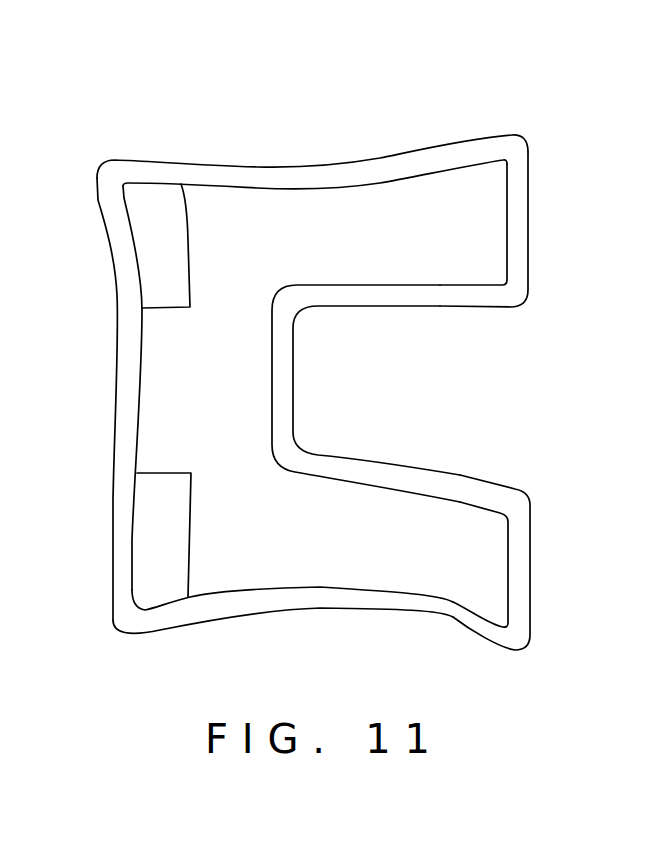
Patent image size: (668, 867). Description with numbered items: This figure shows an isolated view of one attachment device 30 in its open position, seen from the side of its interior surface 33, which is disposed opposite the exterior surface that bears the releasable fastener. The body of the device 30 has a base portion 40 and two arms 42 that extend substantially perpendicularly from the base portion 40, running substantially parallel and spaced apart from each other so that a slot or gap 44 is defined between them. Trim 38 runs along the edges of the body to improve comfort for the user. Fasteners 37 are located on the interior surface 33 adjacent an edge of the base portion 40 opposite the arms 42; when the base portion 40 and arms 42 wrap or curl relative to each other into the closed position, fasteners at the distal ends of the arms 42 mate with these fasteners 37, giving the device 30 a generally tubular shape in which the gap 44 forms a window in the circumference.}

The attachment device 30 is at (97, 160).
The interior surface 33 is at (347, 550).
The fasteners 37 is at (163, 248).
The trim 38 is at (303, 172).
The base portion 40 is at (178, 383).
The arms 42 is at (485, 228).
The gap 44 is at (432, 397).